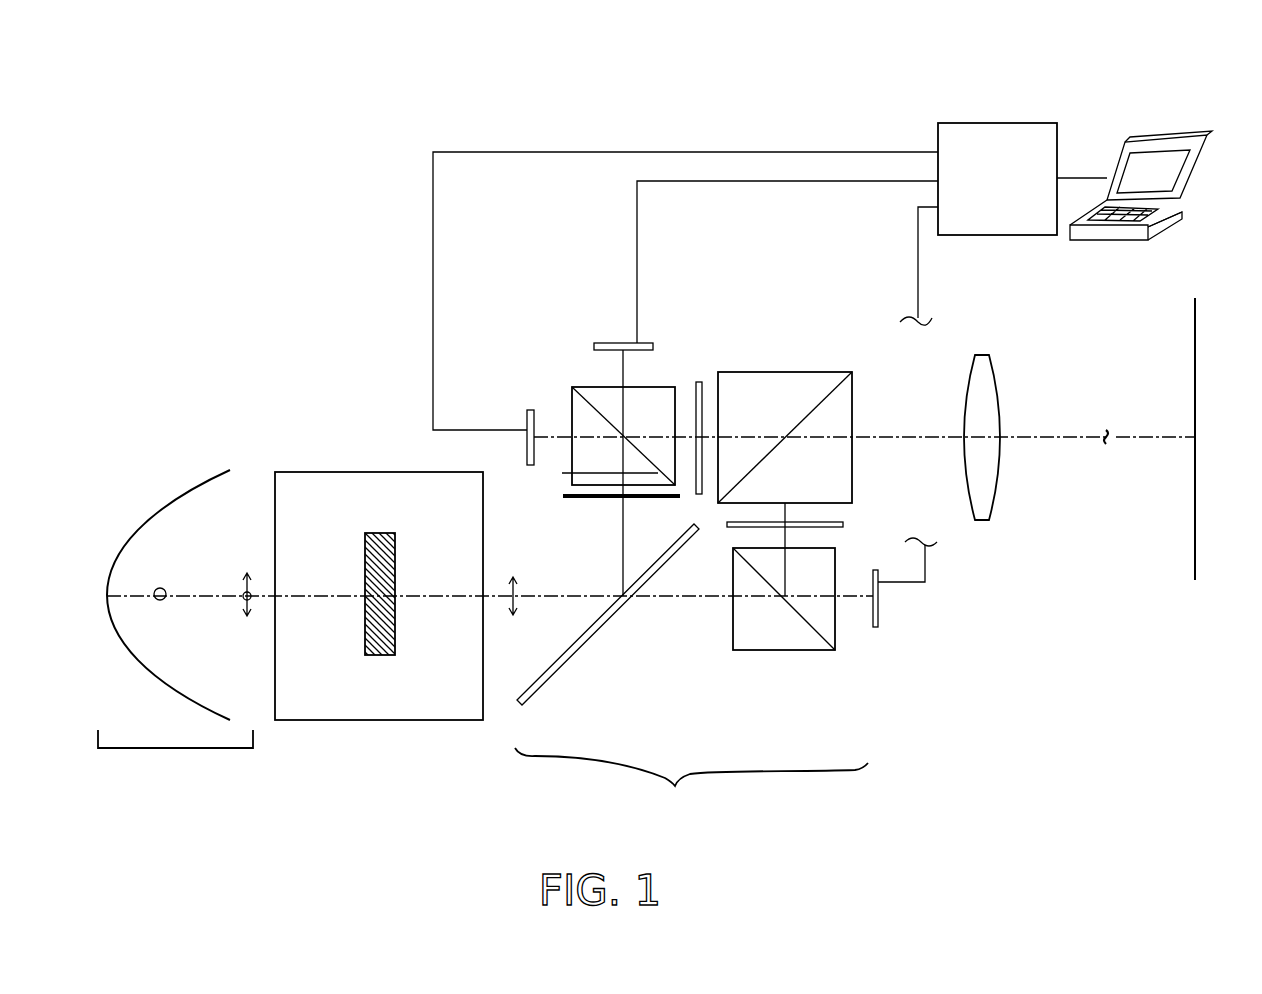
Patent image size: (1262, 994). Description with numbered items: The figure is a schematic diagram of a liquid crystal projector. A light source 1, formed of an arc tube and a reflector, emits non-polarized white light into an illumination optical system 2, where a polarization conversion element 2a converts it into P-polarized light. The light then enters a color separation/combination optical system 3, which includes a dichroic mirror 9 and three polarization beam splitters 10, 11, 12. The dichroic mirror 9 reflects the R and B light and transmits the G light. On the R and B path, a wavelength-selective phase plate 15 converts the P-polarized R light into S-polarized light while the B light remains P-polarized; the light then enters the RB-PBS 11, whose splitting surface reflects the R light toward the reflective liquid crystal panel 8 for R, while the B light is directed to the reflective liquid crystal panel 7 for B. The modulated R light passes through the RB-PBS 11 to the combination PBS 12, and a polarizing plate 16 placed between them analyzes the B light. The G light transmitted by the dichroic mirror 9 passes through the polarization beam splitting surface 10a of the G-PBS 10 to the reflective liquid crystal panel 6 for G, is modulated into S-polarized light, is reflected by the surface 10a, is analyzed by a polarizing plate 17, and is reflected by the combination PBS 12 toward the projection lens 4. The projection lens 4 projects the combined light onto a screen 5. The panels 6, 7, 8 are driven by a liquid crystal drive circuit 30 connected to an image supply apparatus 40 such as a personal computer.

The light source 1 is at (175, 634).
The illumination optical system 2 is at (383, 703).
The polarization conversion element 2a is at (396, 652).
The color separation/combination optical system 3 is at (691, 791).
The projection lens 4 is at (982, 508).
The screen 5 is at (1193, 573).
The reflective liquid crystal panel for G 6 is at (878, 628).
The reflective liquid crystal panel for B 7 is at (612, 343).
The reflective liquid crystal panel for R 8 is at (527, 418).
The dichroic mirror 9 is at (555, 670).
The polarization beam splitter 10 is at (783, 638).
The polarization beam splitting surface 10a is at (808, 628).
The polarization beam splitter 11 is at (657, 395).
The polarization beam splitter 12 is at (800, 387).
The wavelength-selective phase plate 15 is at (563, 496).
The polarizing plate 16 is at (700, 373).
The polarizing plate 17 is at (843, 522).
The liquid crystal drive circuit 30 is at (980, 123).
The image supply apparatus 40 is at (1157, 133).